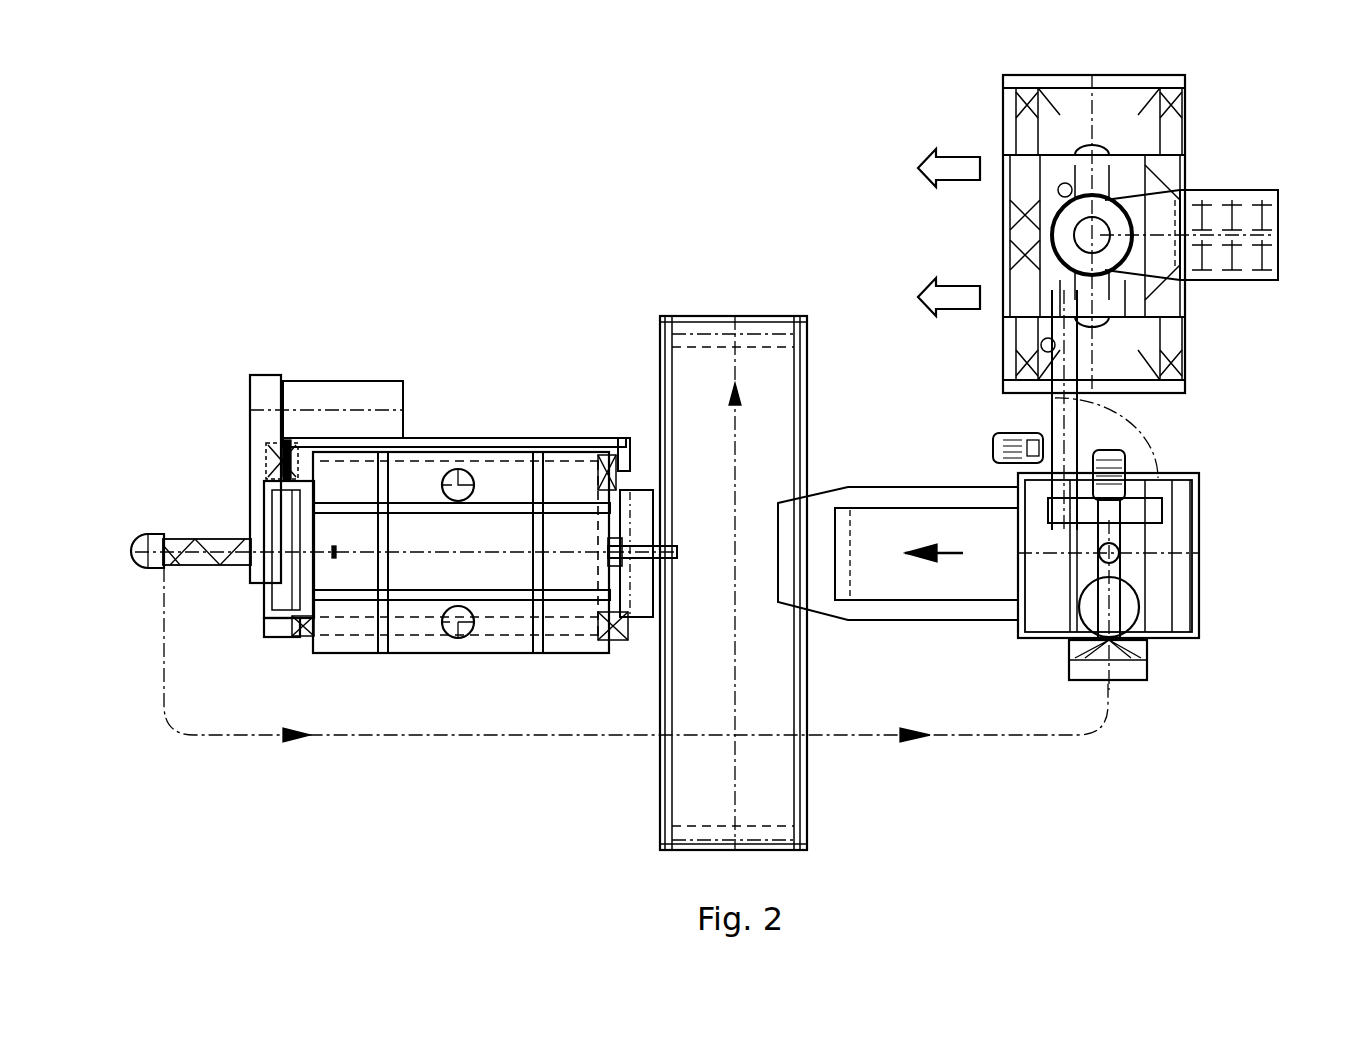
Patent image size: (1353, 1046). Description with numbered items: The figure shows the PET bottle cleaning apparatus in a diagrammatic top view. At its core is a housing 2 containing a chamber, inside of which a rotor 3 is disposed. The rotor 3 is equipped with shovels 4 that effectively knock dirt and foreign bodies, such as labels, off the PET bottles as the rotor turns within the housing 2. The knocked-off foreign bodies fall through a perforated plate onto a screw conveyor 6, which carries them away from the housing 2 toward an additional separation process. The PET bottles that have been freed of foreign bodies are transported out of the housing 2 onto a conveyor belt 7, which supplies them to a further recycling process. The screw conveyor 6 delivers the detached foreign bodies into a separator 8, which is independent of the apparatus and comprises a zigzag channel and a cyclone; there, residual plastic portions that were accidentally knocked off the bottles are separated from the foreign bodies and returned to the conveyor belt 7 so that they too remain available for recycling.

The housing 2 is at (527, 437).
The rotor 3 is at (648, 575).
The shovels 4 is at (467, 551).
The screw conveyor 6 is at (197, 538).
The conveyor belt 7 is at (718, 717).
The separator 8 is at (1242, 151).